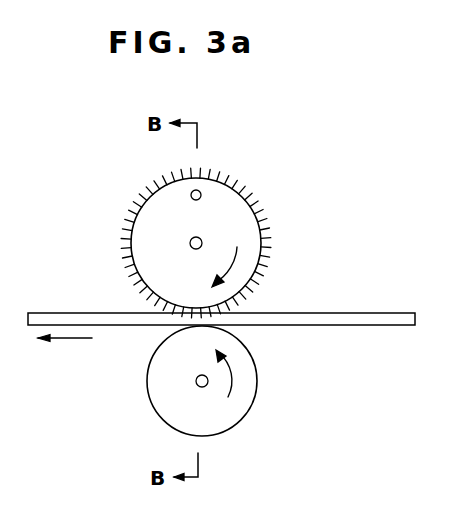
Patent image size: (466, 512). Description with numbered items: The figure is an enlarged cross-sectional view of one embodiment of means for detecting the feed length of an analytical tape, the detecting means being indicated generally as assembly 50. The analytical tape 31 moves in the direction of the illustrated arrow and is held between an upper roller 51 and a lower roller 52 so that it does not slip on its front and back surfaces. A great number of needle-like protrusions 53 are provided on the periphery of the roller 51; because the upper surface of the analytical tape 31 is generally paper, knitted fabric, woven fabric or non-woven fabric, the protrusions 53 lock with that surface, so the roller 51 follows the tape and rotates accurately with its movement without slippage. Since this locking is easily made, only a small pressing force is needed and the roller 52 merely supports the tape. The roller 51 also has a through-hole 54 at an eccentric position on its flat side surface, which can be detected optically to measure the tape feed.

The analytical tape 31 is at (71, 313).
The perforating roller assembly 50 is at (222, 220).
The roller 51 is at (243, 207).
The roller 52 is at (252, 380).
The needle-like protrusions 53 is at (263, 236).
The through-hole 54 is at (191, 194).